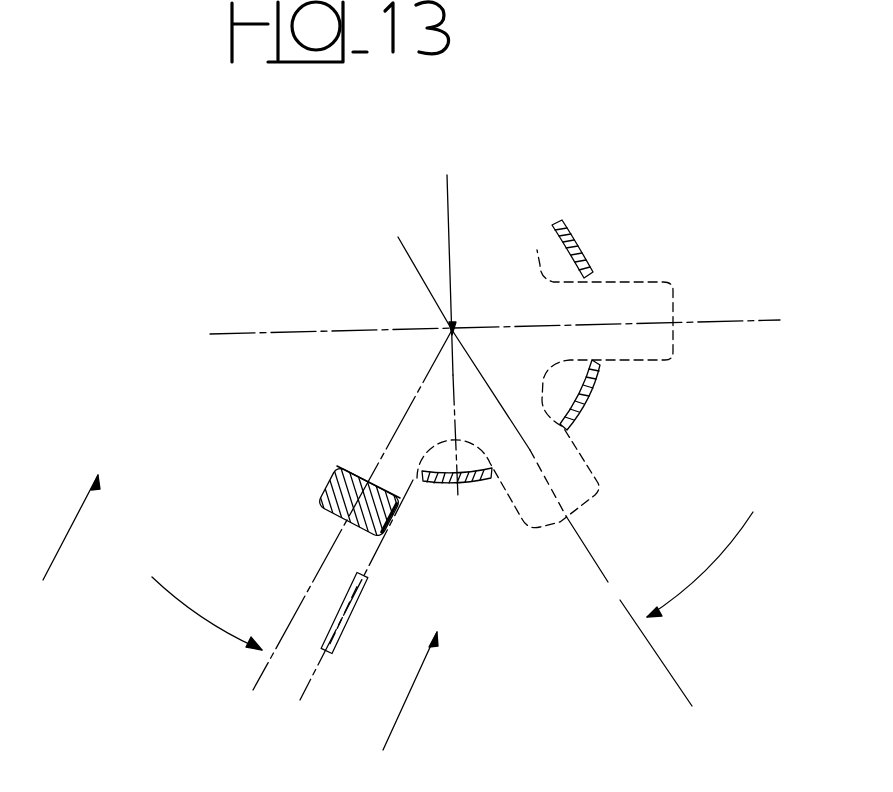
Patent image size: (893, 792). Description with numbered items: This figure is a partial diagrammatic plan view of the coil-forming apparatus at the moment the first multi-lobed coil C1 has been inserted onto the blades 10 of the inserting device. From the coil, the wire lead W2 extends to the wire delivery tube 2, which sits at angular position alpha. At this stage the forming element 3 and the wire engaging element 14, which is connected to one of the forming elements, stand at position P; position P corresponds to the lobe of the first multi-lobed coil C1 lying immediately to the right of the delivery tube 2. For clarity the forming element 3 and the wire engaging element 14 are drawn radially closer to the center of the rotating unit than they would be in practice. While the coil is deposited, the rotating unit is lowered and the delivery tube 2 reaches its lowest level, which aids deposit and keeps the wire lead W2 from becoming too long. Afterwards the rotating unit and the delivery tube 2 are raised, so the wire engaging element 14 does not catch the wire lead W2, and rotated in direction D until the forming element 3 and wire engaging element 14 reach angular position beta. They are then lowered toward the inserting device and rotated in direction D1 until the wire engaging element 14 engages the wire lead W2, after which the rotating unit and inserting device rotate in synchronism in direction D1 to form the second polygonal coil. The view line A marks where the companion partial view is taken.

The wire delivery tube 2 is at (358, 600).
The forming element 3 is at (320, 497).
The blades 10 is at (578, 247).
The wire engaging element 14 is at (349, 472).
The first multi-lobed coil C1 is at (677, 322).
The wire lead W2 is at (373, 552).
The rotation direction D1 is at (188, 604).
The rotation direction D is at (727, 548).
The section line A— A is at (235, 612).
The position P is at (583, 532).